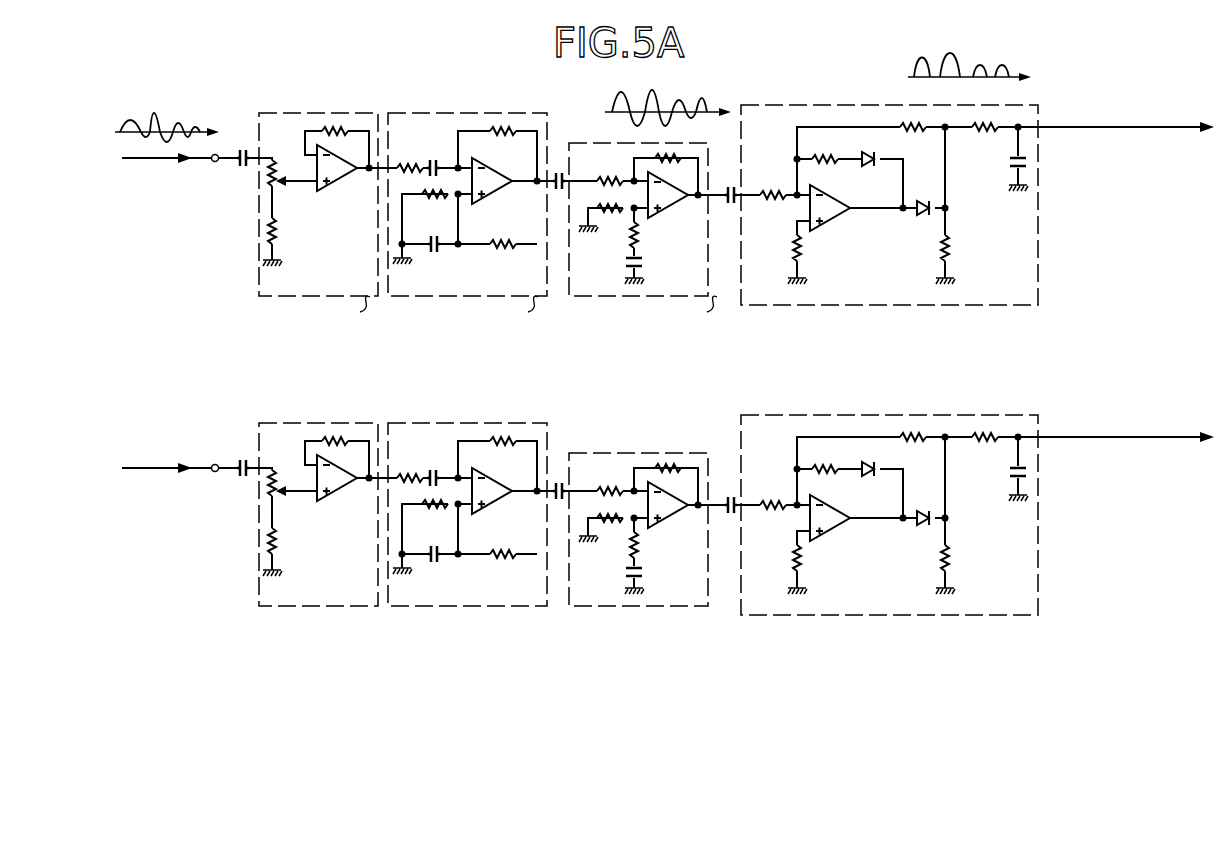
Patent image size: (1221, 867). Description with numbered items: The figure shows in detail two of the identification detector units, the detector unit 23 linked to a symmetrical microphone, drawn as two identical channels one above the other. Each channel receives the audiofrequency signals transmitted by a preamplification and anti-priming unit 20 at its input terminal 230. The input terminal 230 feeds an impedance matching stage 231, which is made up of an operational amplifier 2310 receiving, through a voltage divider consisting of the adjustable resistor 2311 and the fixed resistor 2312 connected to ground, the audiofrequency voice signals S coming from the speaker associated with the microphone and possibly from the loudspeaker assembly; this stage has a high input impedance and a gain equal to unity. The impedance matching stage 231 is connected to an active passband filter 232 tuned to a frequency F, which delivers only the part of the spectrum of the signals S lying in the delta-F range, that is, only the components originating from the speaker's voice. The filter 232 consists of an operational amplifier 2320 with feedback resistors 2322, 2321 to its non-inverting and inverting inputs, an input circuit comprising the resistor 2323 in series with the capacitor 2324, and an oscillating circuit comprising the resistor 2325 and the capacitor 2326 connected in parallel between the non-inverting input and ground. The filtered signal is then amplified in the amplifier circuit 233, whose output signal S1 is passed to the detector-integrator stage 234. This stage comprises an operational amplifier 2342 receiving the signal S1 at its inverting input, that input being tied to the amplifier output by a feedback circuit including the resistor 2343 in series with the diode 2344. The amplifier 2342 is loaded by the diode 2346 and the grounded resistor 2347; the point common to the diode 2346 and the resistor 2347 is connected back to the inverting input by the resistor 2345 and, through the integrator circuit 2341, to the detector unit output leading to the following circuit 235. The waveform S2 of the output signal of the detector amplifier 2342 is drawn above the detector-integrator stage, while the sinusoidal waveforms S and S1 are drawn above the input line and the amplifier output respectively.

The preamplification and anti-priming unit 20 is at (168, 336).
The detector unit 23 is at (150, 564).
The input terminal 230 is at (220, 488).
The impedance matching stage 231 is at (308, 348).
The operational amplifier 2310 is at (346, 181).
The adjustable resistor 2311 is at (278, 189).
The fixed resistor 2312 is at (276, 231).
The active passband filter 232 is at (476, 348).
The operational amplifier 2320 is at (506, 191).
The feedback resistor 2321 is at (508, 135).
The feedback resistor 2322 is at (505, 253).
The resistor 2323 is at (402, 162).
The capacitor 2324 is at (418, 164).
The resistor 2325 is at (418, 198).
The capacitor 2326 is at (433, 255).
The amplifier circuit 233 is at (602, 456).
The detector-integrator stage 234 is at (887, 328).
The integrator circuit 2341 is at (993, 135).
The operational amplifier 2342 is at (834, 226).
The resistor 2343 is at (816, 163).
The diode 2344 is at (867, 172).
The resistor 2345 is at (905, 131).
The diode 2346 is at (922, 216).
The grounded resistor 2347 is at (942, 251).
The detector unit output circuit 235 is at (1116, 269).
The audiofrequency voice signals S is at (196, 155).
The amplified filtered signal S1 is at (716, 186).
The detector output signal S2 is at (946, 120).